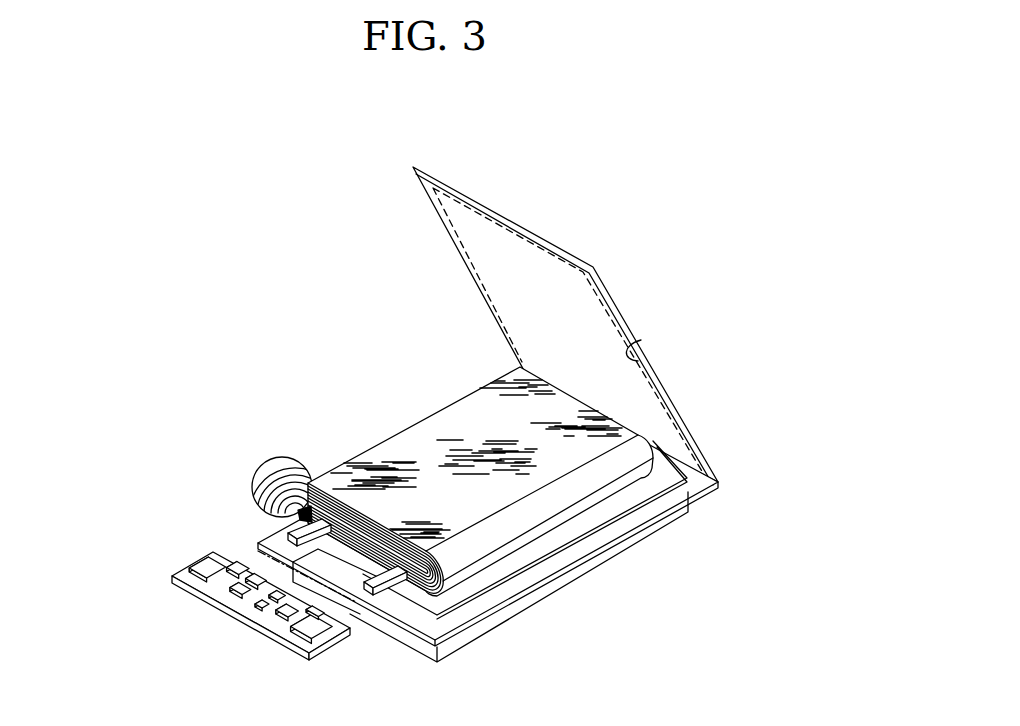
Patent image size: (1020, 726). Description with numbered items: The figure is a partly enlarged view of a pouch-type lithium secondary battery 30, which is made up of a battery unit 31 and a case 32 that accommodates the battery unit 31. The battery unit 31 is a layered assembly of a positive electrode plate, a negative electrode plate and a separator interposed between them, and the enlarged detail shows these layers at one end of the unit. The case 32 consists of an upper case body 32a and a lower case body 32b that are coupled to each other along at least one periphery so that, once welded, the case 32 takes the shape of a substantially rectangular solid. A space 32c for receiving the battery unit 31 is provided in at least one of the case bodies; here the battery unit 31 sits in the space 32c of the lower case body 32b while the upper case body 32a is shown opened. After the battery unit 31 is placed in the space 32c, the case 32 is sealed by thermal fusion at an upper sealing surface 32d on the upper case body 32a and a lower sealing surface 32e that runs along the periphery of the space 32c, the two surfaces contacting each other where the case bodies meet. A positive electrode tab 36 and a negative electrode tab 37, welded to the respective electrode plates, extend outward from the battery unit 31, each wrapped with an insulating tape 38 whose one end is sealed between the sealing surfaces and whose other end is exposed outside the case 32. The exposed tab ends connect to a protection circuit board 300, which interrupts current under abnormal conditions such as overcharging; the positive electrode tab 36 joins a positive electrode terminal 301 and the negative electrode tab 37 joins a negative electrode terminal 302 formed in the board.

The lithium secondary battery 30 is at (426, 436).
The battery unit 31 is at (433, 521).
The case 32 is at (501, 436).
The upper case body 32a is at (579, 326).
The lower case body 32b is at (663, 530).
The space 32c is at (574, 532).
The upper sealing surface 32d is at (640, 341).
The lower sealing surface 32e is at (408, 615).
The positive electrode tab 36 is at (286, 533).
The negative electrode tab 37 is at (374, 591).
The insulating tape 38 is at (428, 592).
The protection circuit board 300 is at (228, 591).
The positive electrode terminal 301 is at (211, 554).
The negative electrode terminal 302 is at (300, 608).